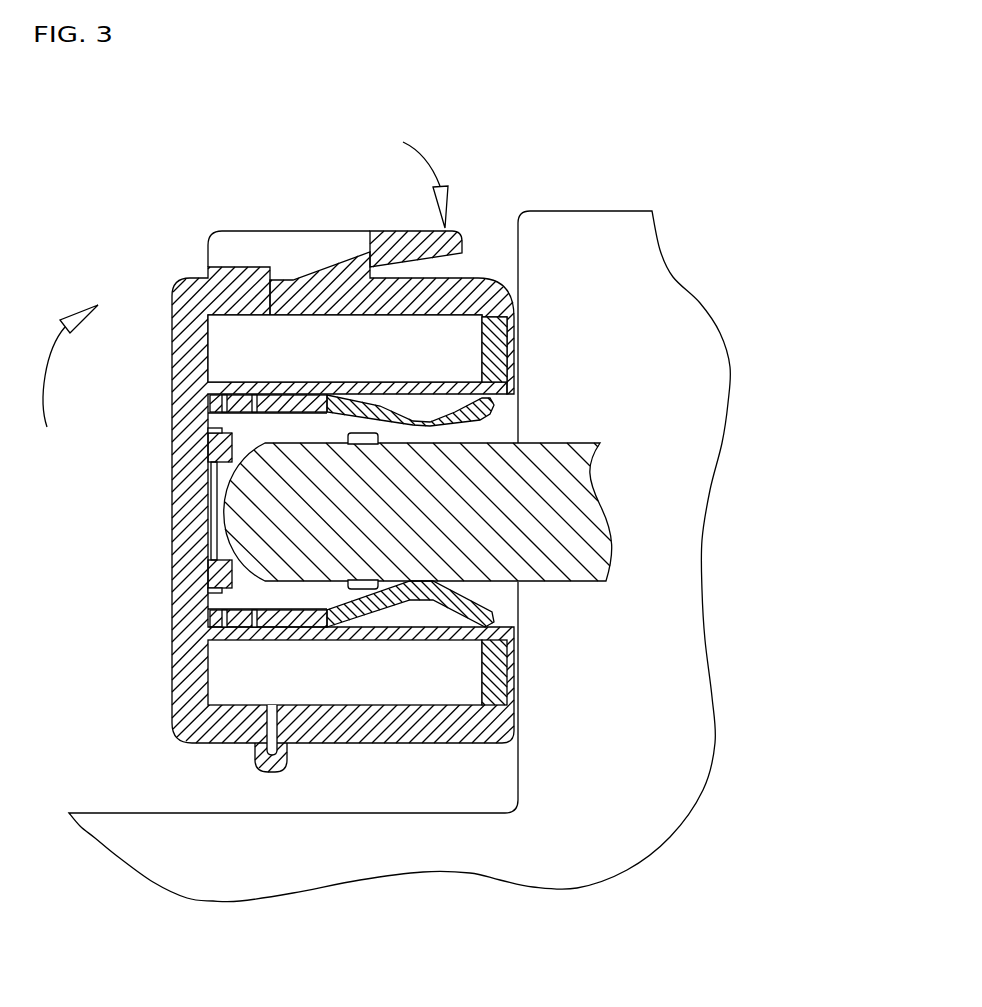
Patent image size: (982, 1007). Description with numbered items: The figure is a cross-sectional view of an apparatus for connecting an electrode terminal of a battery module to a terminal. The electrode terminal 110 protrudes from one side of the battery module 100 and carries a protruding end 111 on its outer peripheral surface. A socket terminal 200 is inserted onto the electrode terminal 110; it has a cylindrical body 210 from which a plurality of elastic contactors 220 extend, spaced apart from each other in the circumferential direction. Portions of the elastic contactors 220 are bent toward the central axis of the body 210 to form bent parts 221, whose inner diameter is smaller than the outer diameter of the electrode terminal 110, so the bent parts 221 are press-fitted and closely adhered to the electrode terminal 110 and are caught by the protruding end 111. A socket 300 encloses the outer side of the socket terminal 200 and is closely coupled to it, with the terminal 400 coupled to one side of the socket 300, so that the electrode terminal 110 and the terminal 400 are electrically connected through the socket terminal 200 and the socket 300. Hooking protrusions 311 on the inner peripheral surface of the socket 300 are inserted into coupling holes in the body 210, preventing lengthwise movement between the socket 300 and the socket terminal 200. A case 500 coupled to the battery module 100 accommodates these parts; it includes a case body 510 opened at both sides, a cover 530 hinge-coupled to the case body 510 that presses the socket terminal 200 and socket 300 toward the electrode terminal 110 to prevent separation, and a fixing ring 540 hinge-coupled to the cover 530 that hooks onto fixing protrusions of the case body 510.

The battery module 100 is at (606, 178).
The electrode terminal 110 is at (570, 525).
The protruding end 111 is at (357, 585).
The socket terminal 200 is at (297, 370).
The body 210 is at (360, 417).
The elastic contactors 220 is at (219, 510).
The bent parts 221 is at (220, 576).
The socket 300 is at (350, 352).
The hooking protrusions 311 is at (227, 397).
The terminal 400 is at (490, 350).
The case 500 is at (160, 262).
The case body 510 is at (483, 283).
The cover 530 is at (186, 556).
The fixing ring 540 is at (393, 229).